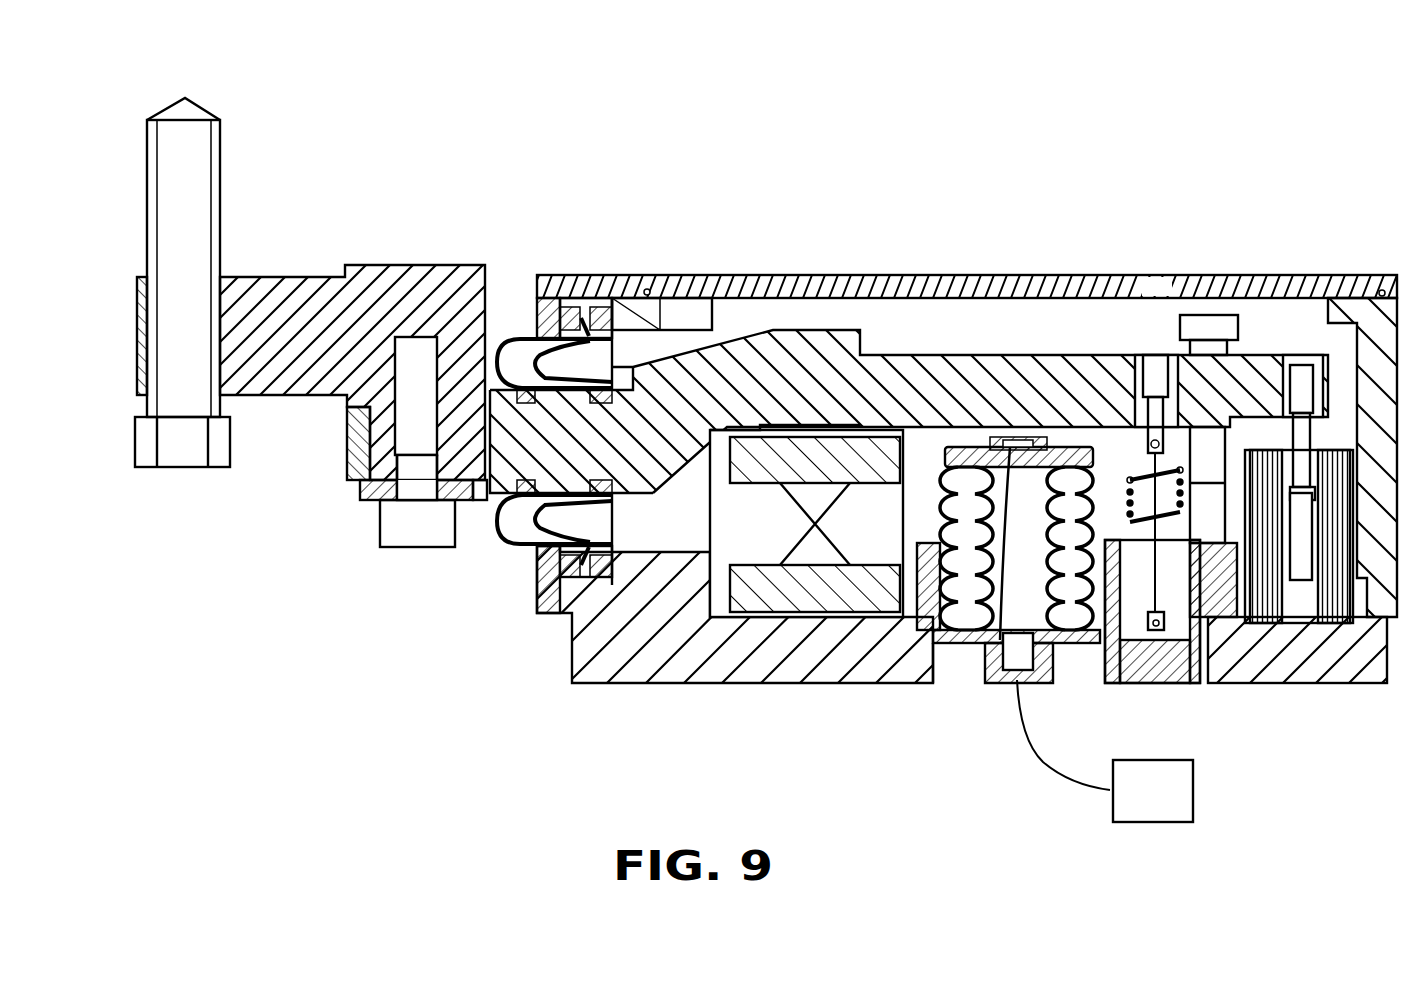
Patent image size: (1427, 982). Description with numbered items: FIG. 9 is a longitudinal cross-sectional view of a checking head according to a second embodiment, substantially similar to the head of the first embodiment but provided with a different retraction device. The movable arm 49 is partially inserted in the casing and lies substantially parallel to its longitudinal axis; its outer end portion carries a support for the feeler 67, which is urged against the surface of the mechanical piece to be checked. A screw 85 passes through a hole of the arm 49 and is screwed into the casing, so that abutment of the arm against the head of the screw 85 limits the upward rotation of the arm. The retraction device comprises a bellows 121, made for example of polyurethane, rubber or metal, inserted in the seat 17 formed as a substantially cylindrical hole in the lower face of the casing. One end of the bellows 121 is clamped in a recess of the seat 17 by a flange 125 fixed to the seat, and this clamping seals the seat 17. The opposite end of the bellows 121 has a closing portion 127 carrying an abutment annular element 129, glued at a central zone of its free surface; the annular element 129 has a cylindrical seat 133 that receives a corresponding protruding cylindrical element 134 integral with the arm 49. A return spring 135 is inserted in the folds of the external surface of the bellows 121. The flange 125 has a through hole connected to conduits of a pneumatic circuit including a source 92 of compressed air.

The feeler 67 is at (192, 112).
The arm 49 is at (483, 512).
The return spring 135 is at (876, 358).
The abutment annular element 129 is at (925, 457).
The protruding cylindrical element 134 is at (997, 437).
The closing portion 127 is at (1073, 440).
The screw 85 is at (1212, 328).
The bellows 121 is at (956, 645).
The flange 125 is at (998, 685).
The seat 17 is at (1057, 650).
The cylindrical seat 133 is at (1063, 662).
The source of compressed air 92 is at (1163, 800).